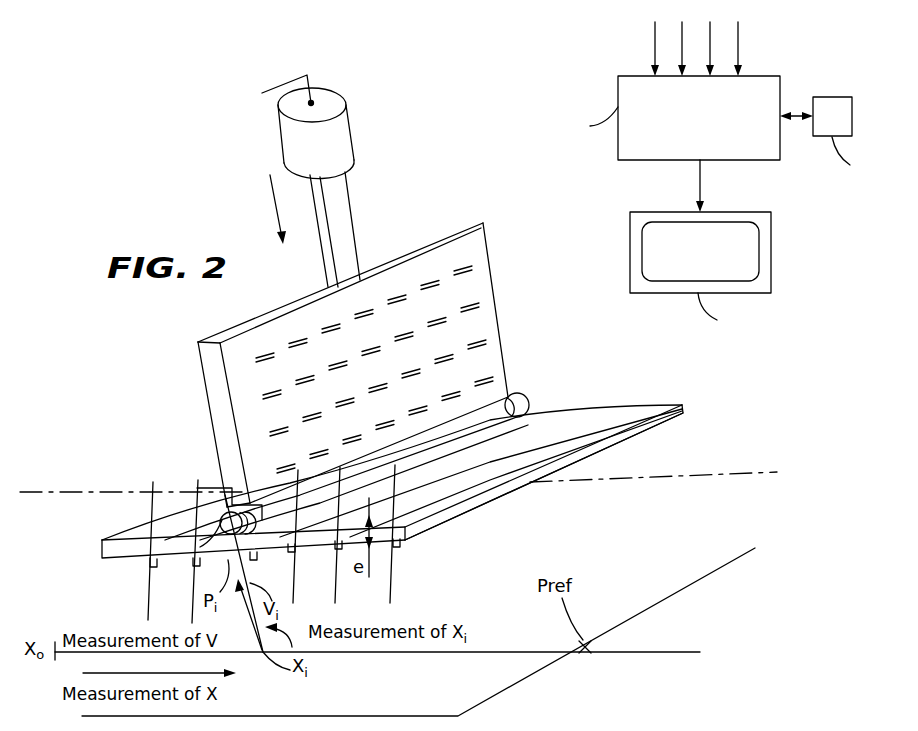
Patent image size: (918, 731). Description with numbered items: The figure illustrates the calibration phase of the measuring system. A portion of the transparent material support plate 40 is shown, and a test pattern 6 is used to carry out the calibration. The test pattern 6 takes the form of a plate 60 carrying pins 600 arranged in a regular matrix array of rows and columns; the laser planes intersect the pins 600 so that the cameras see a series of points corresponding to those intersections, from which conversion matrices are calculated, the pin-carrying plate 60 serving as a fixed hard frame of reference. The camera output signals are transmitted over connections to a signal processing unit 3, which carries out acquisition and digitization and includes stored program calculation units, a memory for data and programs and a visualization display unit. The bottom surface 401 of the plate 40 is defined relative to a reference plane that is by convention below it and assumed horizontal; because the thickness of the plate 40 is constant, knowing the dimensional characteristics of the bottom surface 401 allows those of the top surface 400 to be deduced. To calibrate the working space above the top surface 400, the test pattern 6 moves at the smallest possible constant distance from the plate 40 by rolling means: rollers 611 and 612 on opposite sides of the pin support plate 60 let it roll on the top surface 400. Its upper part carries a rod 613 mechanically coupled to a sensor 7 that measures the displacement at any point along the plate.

The sensor 7 is at (280, 139).
The rod 613 is at (337, 195).
The test pattern 6 is at (372, 332).
The plate 60 is at (482, 243).
The pins 600 is at (463, 271).
The roller 612 is at (215, 490).
The roller 611 is at (530, 397).
The transparent material support plate 40 is at (438, 459).
The top surface 400 is at (403, 459).
The bottom surface 401 is at (608, 453).
The signal processing unit 3 is at (616, 245).